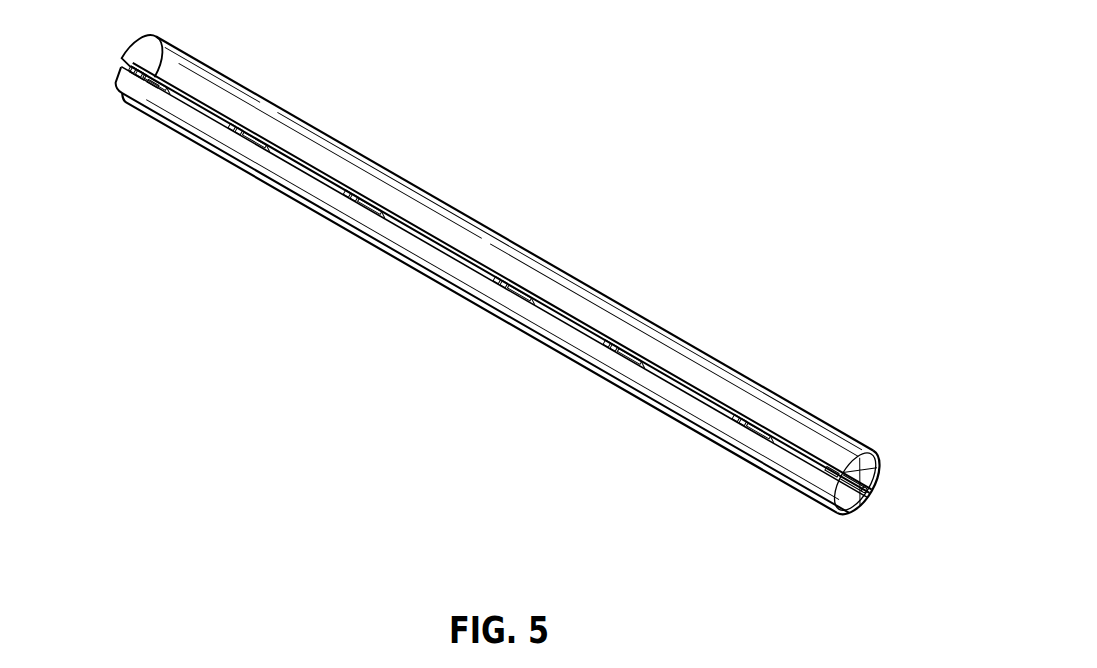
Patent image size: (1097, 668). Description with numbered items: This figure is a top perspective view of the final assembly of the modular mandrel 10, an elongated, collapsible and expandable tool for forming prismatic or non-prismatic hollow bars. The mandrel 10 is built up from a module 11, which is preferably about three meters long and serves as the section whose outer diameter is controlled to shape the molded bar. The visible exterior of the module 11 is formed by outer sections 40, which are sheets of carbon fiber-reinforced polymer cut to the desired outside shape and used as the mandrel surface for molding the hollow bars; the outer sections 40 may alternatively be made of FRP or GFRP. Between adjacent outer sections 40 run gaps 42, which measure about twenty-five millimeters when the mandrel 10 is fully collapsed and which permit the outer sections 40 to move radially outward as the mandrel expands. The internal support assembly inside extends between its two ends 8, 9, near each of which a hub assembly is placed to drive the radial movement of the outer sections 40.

The end 8 is at (111, 63).
The end 9 is at (867, 489).
The modular mandrel 10 is at (698, 183).
The module 11 is at (338, 141).
The outer section 40 is at (812, 443).
The gap 42 is at (782, 453).